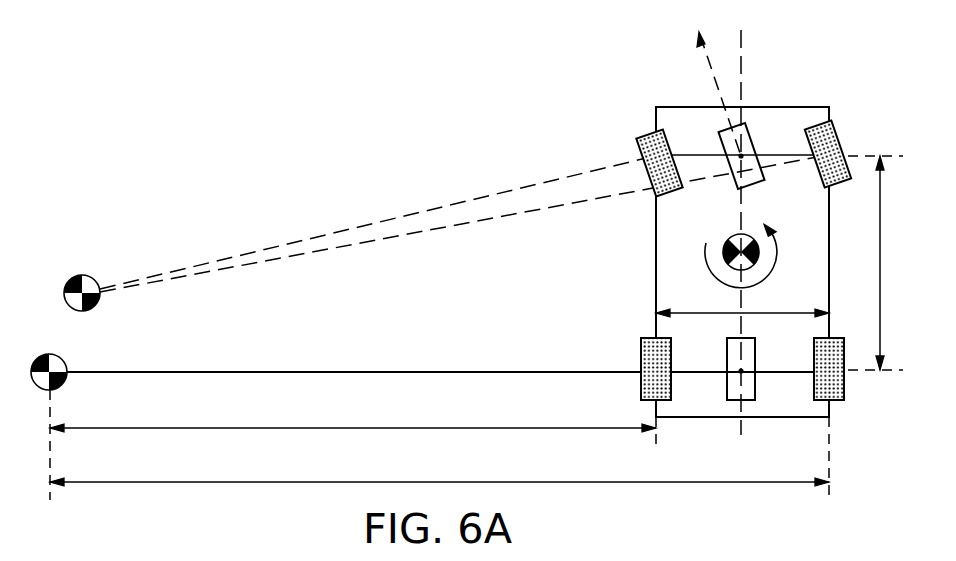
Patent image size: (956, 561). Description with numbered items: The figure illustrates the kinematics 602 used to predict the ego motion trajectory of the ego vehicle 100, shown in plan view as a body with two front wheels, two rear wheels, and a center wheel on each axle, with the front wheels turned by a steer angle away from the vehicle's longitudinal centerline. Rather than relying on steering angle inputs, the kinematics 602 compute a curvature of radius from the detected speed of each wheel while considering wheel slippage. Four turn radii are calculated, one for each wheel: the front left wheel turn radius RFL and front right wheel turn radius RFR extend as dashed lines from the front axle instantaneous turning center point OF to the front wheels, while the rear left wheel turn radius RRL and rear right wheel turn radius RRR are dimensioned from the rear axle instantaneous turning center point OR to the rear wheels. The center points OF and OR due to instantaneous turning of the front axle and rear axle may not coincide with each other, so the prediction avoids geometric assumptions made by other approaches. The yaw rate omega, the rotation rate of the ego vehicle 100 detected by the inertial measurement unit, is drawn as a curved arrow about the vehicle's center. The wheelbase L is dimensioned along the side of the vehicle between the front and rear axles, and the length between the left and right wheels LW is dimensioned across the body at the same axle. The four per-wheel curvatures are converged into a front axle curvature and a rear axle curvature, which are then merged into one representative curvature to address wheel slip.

The ego vehicle 100 is at (797, 117).
The kinematics 602 is at (350, 87).
The front axle instantaneous turning center point OF is at (82, 275).
The rear axle instantaneous turning center point OR is at (50, 354).
The front left wheel turn radius RFL is at (379, 222).
The front right wheel turn radius RFR is at (464, 223).
The rear left wheel turn radius RRL is at (353, 409).
The rear right wheel turn radius RRR is at (439, 463).
The yaw rate omega is at (741, 247).
The length between left and right wheels LW is at (742, 297).
The wheelbase L is at (877, 263).